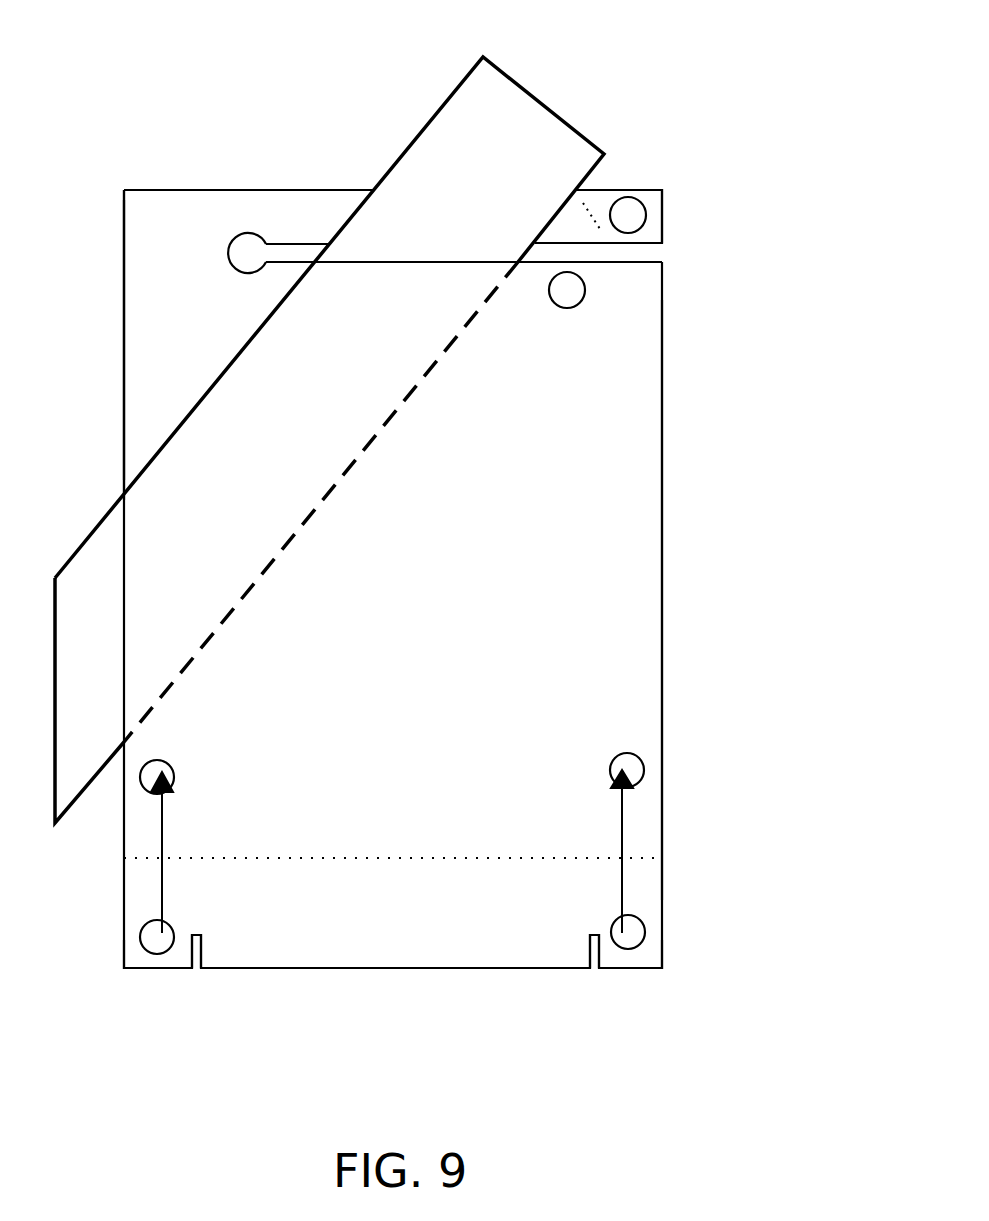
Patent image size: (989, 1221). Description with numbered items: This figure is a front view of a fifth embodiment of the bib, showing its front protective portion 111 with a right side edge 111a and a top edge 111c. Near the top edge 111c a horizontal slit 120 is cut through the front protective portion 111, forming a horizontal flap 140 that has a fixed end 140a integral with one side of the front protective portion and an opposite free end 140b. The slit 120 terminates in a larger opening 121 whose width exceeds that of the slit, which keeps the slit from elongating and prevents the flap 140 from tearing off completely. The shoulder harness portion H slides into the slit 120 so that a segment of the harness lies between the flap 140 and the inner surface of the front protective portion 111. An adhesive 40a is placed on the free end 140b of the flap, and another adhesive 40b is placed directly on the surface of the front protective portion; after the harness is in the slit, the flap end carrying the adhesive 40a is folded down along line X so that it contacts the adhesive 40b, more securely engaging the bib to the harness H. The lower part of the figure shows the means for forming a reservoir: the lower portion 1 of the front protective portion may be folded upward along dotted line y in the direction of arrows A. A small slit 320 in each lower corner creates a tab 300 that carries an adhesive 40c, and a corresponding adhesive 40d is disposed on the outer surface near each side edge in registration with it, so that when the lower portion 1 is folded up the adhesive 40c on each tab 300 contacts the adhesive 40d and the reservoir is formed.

The lower portion 1 is at (396, 556).
The front protective portion 111 is at (448, 538).
The right side edge of main body 111a is at (628, 408).
The top edge 111c is at (213, 190).
The horizontal flap 140 is at (330, 213).
The fixed end 140a is at (152, 232).
The free end 140b is at (648, 200).
The horizontal slit 120 is at (640, 252).
The terminal opening 121 is at (228, 258).
The adhesive 40a is at (630, 223).
The adhesive 40b is at (567, 289).
The adhesive 40c is at (158, 943).
The adhesive 40d is at (142, 788).
The tab 300 is at (143, 962).
The small slit 320 is at (197, 957).
The shoulder harness portion H is at (500, 145).
The fold line X is at (583, 203).
The fold direction arrows A is at (165, 838).
The fold line y is at (342, 858).